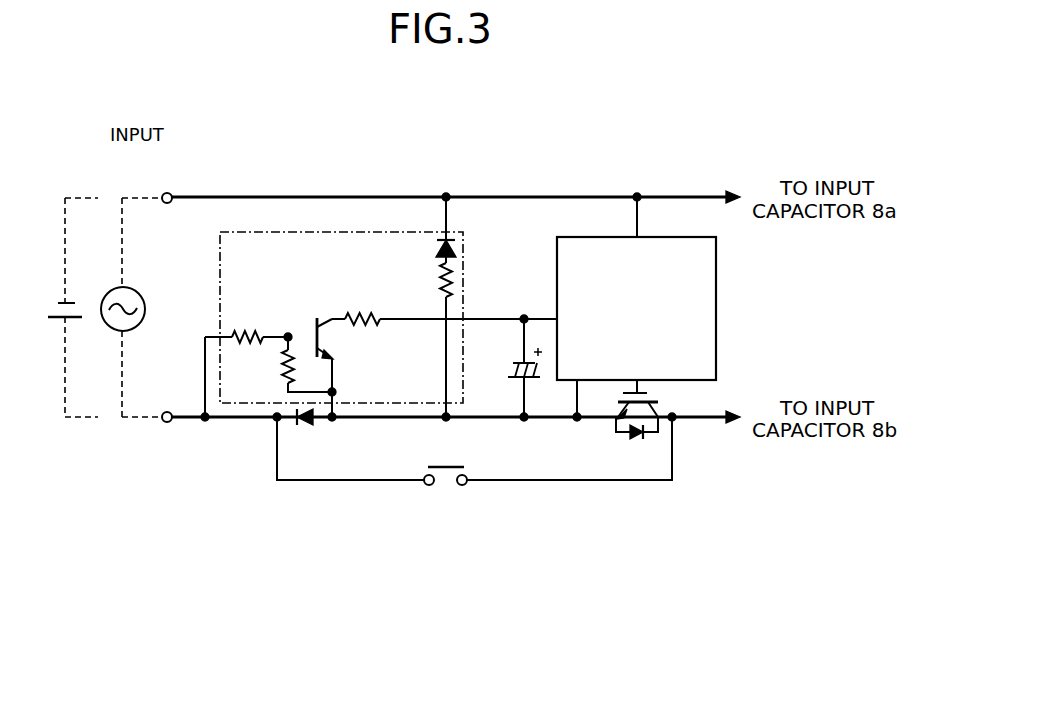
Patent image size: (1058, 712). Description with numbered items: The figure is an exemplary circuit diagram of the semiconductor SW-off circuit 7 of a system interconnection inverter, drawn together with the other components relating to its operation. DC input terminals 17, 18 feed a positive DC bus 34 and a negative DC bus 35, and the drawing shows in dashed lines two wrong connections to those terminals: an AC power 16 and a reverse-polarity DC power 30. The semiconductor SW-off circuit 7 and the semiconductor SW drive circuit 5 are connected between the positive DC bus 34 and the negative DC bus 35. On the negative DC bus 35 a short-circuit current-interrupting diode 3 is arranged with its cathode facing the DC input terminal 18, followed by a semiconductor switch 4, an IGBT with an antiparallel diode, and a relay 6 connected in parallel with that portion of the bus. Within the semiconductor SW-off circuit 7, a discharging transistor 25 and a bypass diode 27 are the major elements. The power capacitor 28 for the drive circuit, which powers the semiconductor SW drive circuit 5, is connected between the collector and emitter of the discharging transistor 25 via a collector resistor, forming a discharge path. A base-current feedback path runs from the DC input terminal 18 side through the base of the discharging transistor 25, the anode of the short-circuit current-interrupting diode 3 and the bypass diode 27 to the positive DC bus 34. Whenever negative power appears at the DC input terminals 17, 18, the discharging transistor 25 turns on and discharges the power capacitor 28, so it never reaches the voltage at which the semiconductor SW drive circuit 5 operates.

The short-circuit current-interrupting diode 3 is at (307, 427).
The semiconductor switch 4 is at (616, 425).
The semiconductor switch drive circuit 5 is at (716, 264).
The relay 6 is at (429, 486).
The semiconductor switch-off circuit 7 is at (219, 248).
The AC power 16 is at (110, 293).
The DC input terminal 17 is at (162, 196).
The DC input terminal 18 is at (165, 422).
The discharging transistor 25 is at (316, 322).
The bypass diode 27 is at (439, 251).
The power capacitor for the drive circuit 28 is at (512, 364).
The DC power 30 is at (60, 302).
The positive DC bus 34 is at (280, 195).
The negative DC bus 35 is at (238, 421).